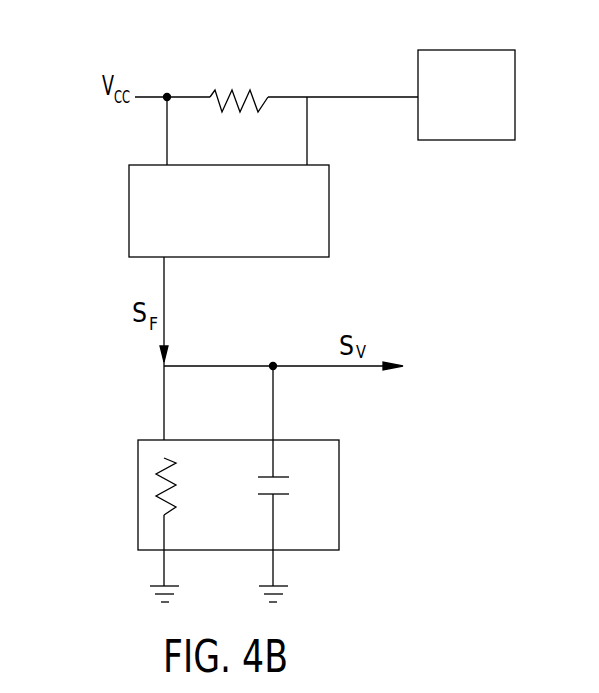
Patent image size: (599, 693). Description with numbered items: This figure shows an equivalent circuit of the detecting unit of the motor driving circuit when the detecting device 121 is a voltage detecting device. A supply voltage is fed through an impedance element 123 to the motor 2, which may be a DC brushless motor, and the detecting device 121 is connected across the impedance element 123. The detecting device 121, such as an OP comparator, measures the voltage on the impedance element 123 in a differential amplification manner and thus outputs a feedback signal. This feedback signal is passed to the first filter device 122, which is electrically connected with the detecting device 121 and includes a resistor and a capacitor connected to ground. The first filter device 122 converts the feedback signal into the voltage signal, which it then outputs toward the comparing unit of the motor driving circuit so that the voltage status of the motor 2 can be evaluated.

The motor 2 is at (515, 78).
The detecting device 121 is at (129, 215).
The first filter device 122 is at (138, 495).
The impedance element 123 is at (255, 92).